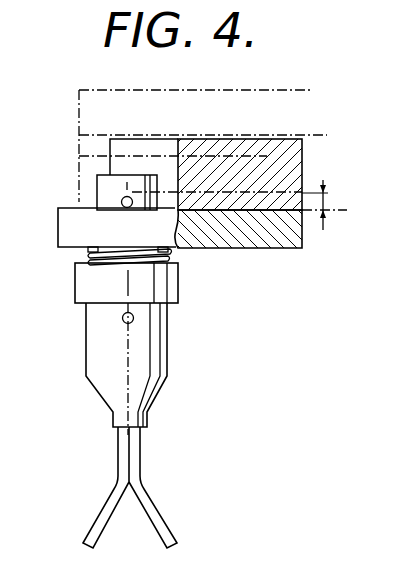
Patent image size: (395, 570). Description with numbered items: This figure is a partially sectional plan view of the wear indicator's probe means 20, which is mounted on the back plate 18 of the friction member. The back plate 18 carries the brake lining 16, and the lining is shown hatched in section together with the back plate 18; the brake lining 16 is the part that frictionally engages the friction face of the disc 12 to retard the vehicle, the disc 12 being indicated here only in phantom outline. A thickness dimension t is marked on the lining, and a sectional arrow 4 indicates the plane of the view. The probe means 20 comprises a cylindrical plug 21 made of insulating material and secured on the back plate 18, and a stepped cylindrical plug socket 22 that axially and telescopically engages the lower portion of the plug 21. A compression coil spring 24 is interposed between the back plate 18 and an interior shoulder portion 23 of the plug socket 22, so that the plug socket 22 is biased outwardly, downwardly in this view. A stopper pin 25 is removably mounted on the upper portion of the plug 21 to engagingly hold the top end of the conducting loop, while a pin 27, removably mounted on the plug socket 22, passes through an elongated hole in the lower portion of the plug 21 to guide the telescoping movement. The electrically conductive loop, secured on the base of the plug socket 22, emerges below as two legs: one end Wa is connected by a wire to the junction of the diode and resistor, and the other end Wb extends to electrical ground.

The disc 12 is at (242, 102).
The brake lining 16 is at (260, 147).
The back plate 18 is at (276, 233).
The probe means 20 is at (72, 200).
The cylindrical plug 21 is at (146, 175).
The stepped cylindrical plug socket 22 is at (153, 333).
The interior shoulder portion 23 is at (88, 276).
The compression coil spring 24 is at (168, 255).
The stopper pin 25 is at (121, 199).
The pin 27 is at (122, 319).
The section indicator 4 is at (310, 188).
The thickness dimension t is at (327, 202).
The one end of the conducting loop Wa is at (156, 520).
The other end of the conducting loop Wb is at (106, 517).